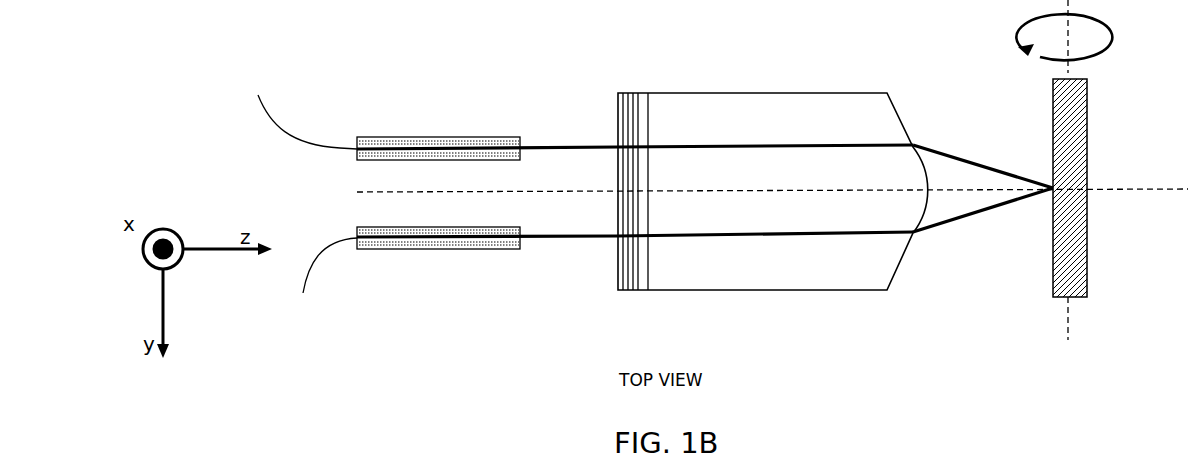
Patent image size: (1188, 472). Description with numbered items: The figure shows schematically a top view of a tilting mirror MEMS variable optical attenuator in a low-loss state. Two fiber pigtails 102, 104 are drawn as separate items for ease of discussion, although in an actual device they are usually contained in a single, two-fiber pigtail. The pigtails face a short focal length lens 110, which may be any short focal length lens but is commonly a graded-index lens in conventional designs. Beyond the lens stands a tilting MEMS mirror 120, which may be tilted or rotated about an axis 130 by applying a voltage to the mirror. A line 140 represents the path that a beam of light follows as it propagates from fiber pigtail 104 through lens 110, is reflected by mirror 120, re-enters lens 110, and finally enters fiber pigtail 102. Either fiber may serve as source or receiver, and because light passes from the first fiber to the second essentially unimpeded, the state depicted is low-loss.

The fiber pigtail 102 is at (393, 140).
The fiber pigtail 104 is at (400, 247).
The short focal length lens 110 is at (710, 113).
The tilting MEMS mirror 120 is at (1085, 137).
The axis 130 is at (1073, 325).
The line representing the beam path 140 is at (787, 236).